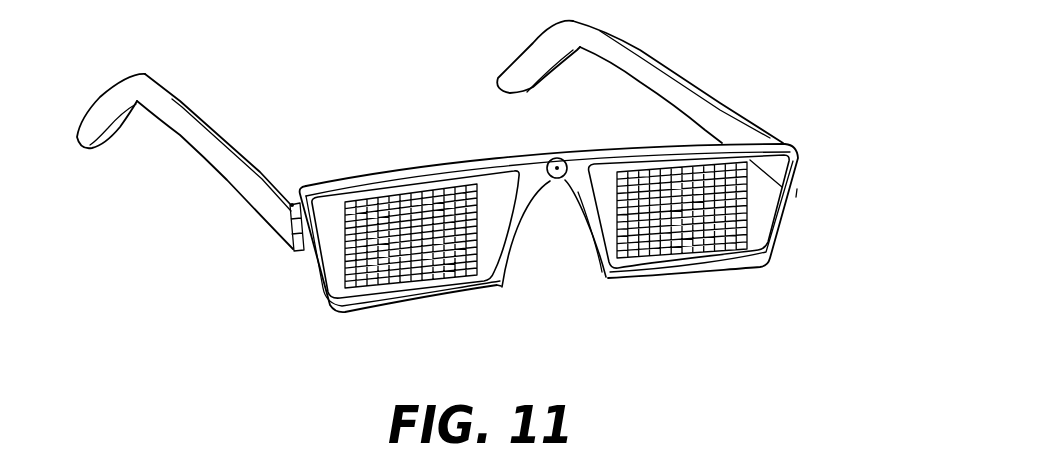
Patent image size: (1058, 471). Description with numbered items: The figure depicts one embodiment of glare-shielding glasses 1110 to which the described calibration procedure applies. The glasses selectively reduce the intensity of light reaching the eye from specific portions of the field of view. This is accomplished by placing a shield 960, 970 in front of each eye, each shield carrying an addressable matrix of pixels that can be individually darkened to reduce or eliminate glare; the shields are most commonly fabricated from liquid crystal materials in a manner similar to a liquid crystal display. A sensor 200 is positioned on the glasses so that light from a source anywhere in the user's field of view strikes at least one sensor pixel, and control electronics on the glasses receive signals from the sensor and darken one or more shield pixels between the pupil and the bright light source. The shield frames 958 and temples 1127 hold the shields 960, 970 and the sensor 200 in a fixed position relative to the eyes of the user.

The glare-shielding glasses 1110 is at (794, 100).
The temples 1127 is at (238, 155).
The sensor 200 is at (558, 180).
The shield frames 958 is at (606, 277).
The shield 960 is at (680, 250).
The shield 970 is at (408, 277).